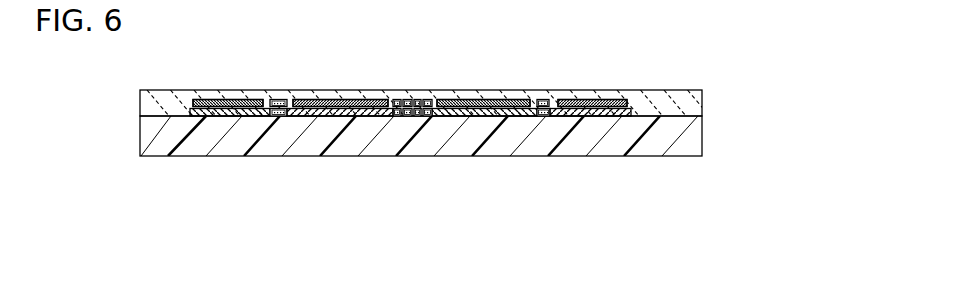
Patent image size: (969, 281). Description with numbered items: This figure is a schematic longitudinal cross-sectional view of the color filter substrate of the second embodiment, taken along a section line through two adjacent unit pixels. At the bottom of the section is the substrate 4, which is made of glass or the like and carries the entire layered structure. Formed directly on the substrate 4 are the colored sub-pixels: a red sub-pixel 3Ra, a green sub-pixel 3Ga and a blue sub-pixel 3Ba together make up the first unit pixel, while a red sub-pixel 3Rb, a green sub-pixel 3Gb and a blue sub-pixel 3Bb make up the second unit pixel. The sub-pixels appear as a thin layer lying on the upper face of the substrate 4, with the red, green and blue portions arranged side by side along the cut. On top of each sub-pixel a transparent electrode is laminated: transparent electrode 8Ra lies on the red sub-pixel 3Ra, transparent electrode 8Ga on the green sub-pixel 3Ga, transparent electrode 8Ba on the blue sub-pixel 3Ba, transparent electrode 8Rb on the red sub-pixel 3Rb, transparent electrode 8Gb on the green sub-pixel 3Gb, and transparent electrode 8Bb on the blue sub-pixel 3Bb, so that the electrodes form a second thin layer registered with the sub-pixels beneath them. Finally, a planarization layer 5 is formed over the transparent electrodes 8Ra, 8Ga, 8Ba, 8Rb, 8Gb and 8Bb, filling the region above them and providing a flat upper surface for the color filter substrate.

The substrate 4 is at (150, 157).
The planarization layer 5 is at (163, 100).
The red sub-pixel 3Ra is at (207, 117).
The green sub-pixel 3Ga is at (276, 117).
The blue sub-pixel 3Ba is at (312, 117).
The red sub-pixel 3Rb is at (410, 117).
The green sub-pixel 3Gb is at (418, 117).
The blue sub-pixel 3Bb is at (610, 117).
The transparent electrode 8Ra is at (222, 99).
The transparent electrode 8Ga is at (277, 99).
The transparent electrode 8Ba is at (337, 99).
The transparent electrode 8Rb is at (473, 99).
The transparent electrode 8Gb is at (540, 99).
The transparent electrode 8Bb is at (410, 99).